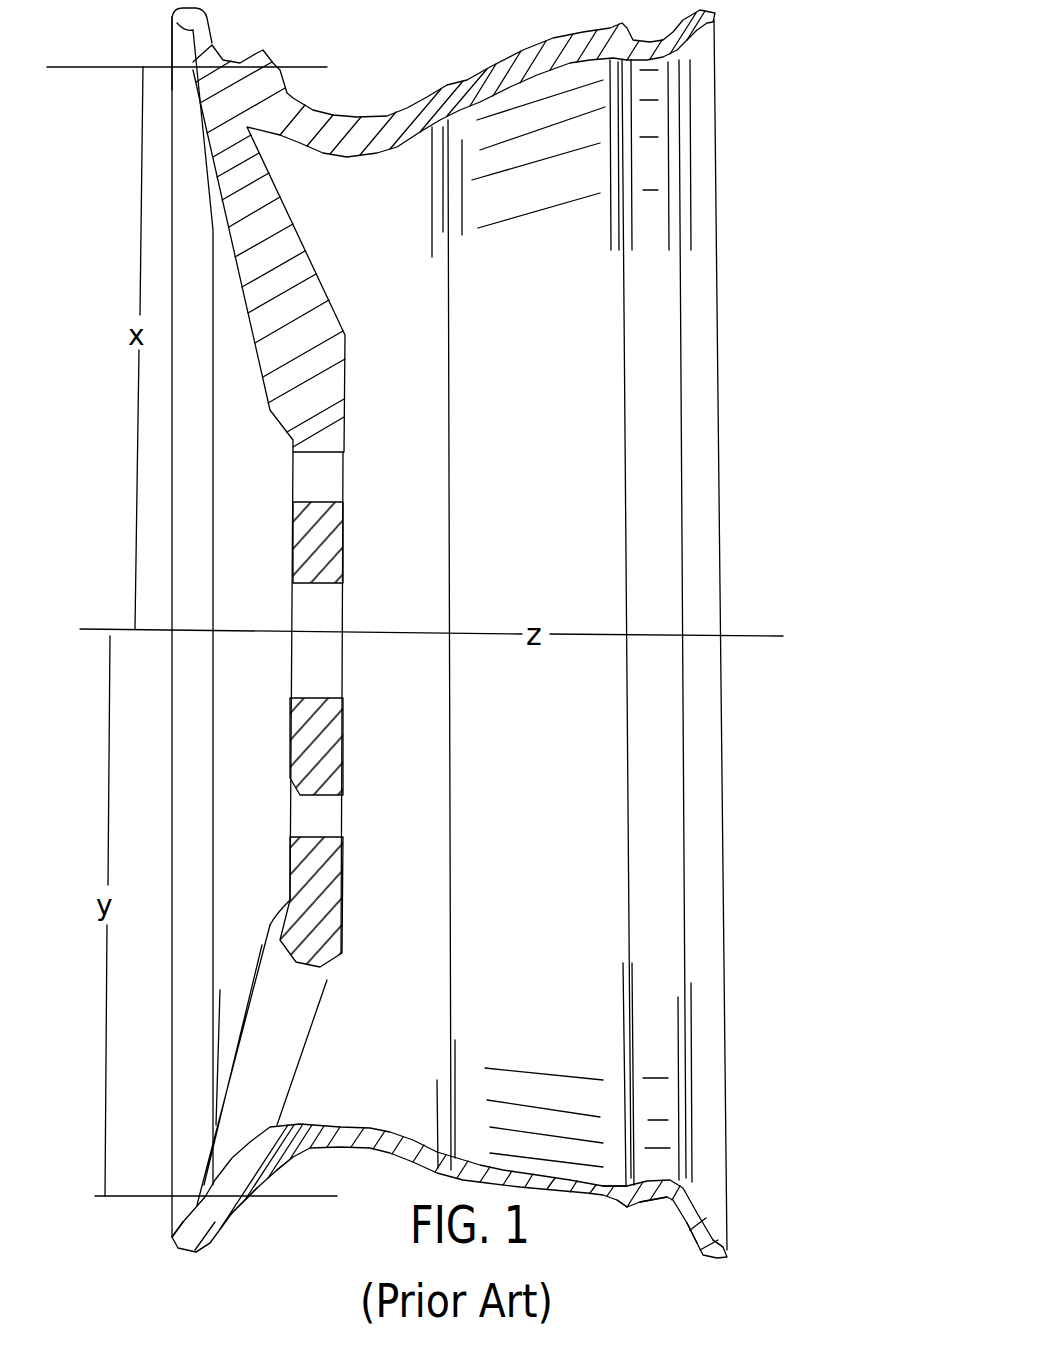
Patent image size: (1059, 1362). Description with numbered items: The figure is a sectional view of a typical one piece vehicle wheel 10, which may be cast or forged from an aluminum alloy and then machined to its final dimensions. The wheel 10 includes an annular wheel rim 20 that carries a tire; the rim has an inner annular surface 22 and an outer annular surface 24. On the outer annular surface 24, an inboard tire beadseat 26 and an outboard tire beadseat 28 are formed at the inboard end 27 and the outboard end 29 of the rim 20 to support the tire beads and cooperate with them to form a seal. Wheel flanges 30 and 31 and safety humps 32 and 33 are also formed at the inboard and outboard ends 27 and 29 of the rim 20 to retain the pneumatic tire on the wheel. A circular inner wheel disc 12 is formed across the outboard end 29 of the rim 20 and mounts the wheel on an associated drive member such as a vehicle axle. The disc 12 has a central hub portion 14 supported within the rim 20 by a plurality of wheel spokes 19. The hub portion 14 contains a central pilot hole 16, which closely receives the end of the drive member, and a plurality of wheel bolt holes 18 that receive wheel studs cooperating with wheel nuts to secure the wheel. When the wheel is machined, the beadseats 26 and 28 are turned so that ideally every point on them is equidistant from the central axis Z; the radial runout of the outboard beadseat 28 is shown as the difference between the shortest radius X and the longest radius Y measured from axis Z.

The vehicle wheel 10 is at (803, 310).
The inner wheel disc 12 is at (362, 392).
The central hub portion 14 is at (325, 540).
The central pilot hole 16 is at (315, 695).
The wheel bolt holes 18 is at (293, 480).
The wheel spokes 19 is at (303, 243).
The annular wheel rim 20 is at (700, 613).
The inner annular surface 22 is at (622, 1150).
The outer annular surface 24 is at (444, 1177).
The inboard tire beadseat 26 is at (656, 1203).
The inboard end 27 is at (732, 1218).
The outboard tire beadseat 28 is at (253, 1205).
The outboard end 29 is at (165, 1222).
The wheel flange 30 is at (686, 1235).
The wheel flange 31 is at (222, 1240).
The safety hump 32 is at (627, 1212).
The safety hump 33 is at (285, 1200).